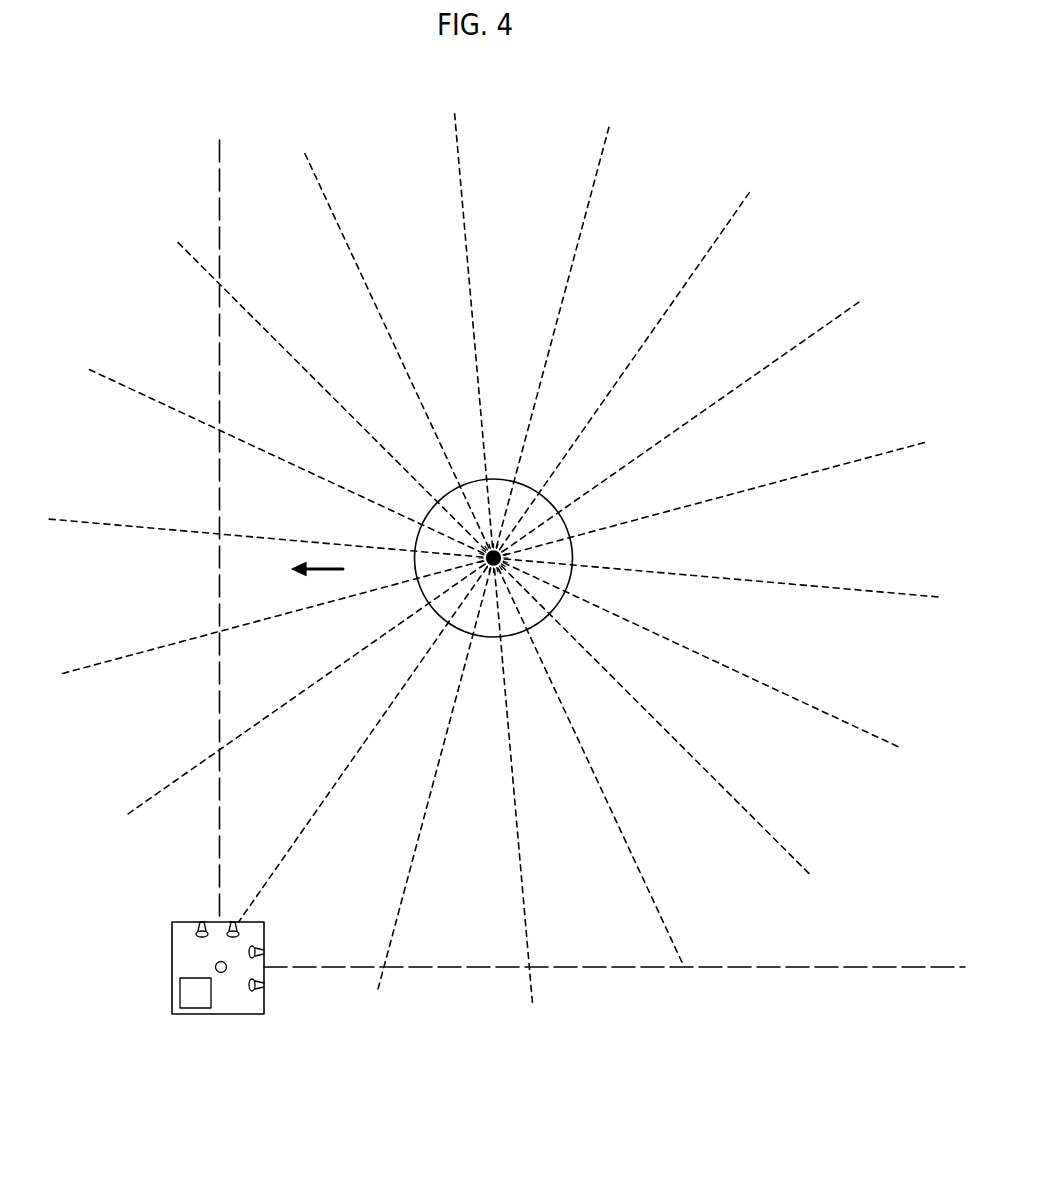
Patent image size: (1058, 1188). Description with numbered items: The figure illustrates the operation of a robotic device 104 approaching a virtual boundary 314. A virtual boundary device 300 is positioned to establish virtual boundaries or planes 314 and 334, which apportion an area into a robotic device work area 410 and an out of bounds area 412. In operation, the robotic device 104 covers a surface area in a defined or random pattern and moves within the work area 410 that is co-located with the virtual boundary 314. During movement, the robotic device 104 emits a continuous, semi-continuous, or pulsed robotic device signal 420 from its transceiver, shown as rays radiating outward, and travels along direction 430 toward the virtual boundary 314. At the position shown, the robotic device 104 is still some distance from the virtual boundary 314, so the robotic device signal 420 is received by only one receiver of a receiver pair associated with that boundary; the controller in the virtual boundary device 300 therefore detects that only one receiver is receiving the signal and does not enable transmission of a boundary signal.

The robotic device 104 is at (500, 479).
The virtual boundary device 300 is at (172, 960).
The virtual boundary 314 is at (218, 558).
The virtual boundary 334 is at (494, 968).
The robotic device work area 410 is at (307, 767).
The out of bounds area 412 is at (88, 761).
The robotic device signal 420 is at (783, 367).
The direction 430 is at (322, 565).